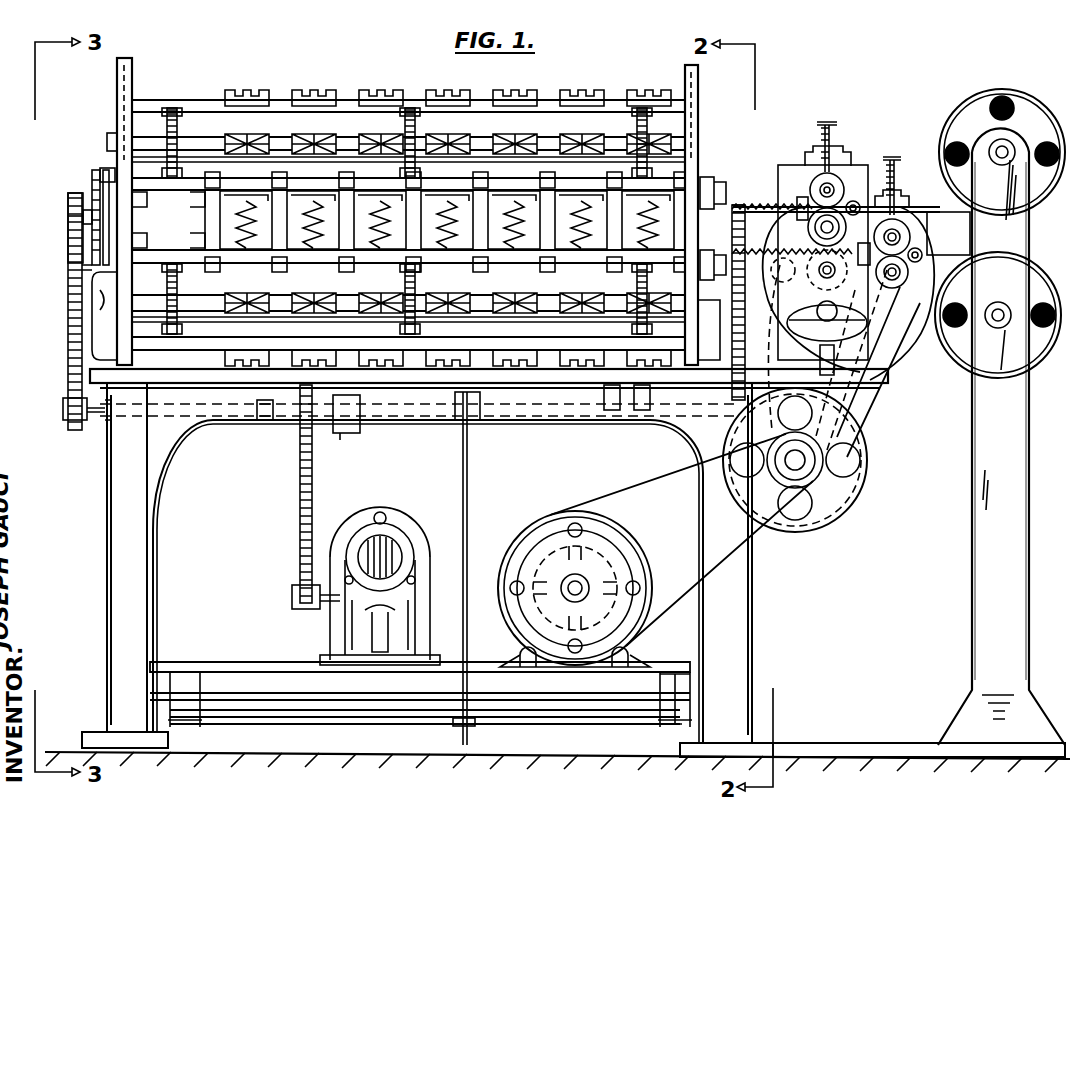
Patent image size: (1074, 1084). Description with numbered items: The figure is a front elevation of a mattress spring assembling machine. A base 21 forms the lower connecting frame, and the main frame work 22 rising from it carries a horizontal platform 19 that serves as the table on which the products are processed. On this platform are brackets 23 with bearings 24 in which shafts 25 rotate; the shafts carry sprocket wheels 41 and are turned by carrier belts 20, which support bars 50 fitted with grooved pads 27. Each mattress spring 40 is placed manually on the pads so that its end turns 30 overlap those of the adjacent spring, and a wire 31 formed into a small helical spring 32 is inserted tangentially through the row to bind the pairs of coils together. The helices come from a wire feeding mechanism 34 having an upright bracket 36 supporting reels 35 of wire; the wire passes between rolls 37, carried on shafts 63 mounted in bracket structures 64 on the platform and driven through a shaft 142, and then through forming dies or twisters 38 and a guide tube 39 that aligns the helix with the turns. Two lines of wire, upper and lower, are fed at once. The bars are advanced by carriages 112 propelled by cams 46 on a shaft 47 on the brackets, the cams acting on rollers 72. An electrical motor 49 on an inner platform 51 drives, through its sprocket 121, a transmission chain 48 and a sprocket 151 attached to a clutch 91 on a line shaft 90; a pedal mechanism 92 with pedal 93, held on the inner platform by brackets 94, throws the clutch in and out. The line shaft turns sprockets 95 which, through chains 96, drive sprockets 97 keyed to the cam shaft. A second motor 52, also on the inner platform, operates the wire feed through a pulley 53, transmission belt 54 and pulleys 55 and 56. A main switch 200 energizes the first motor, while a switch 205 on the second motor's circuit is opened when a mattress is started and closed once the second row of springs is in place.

The horizontal platform 19 is at (140, 372).
The carrier belts 20 is at (418, 130).
The base 21 is at (90, 733).
The main frame work 22 is at (106, 600).
The brackets 23 is at (120, 272).
The bearings 24 is at (108, 142).
The shafts 25 is at (108, 168).
The pads 27 is at (325, 100).
The end turns (coils) 30 is at (515, 206).
The wire 31 is at (947, 214).
The helical spring (helix) 32 is at (785, 182).
The wire feeding mechanism 34 is at (931, 234).
The reels 35 is at (1040, 198).
The upright bracket 36 is at (1028, 484).
The rolls 37 is at (905, 218).
The forming dies (twisters) 38 is at (802, 196).
The guide tube 39 is at (722, 194).
The mattress spring 40 is at (204, 220).
The sprocket wheels 41 is at (650, 130).
The cams 46 is at (92, 186).
The shaft 47 is at (68, 214).
The transmission chain 48 is at (298, 543).
The electrical motor 49 is at (380, 535).
The bars 50 is at (200, 120).
The inner platform 51 is at (246, 663).
The motor 52 is at (632, 540).
The pulley 53 is at (560, 590).
The transmission belt 54 is at (762, 548).
The pulley 55 is at (860, 490).
The pulley 56 is at (880, 330).
The shafts 63 is at (840, 185).
The bracket structures 64 is at (835, 190).
The rollers 72 is at (80, 266).
The line shaft 90 is at (122, 412).
The clutch 91 is at (356, 430).
The pedal mechanism 92 is at (468, 490).
The pedal 93 is at (310, 724).
The brackets 94 is at (668, 696).
The sprockets 95 is at (66, 420).
The chains 96 is at (66, 347).
The sprockets 97 is at (68, 232).
The carriages 112 is at (100, 158).
The sprocket 121 is at (300, 612).
The shaft 142 is at (826, 278).
The sprocket 151 is at (290, 412).
The main switch 200 is at (612, 412).
The switch 205 is at (641, 412).